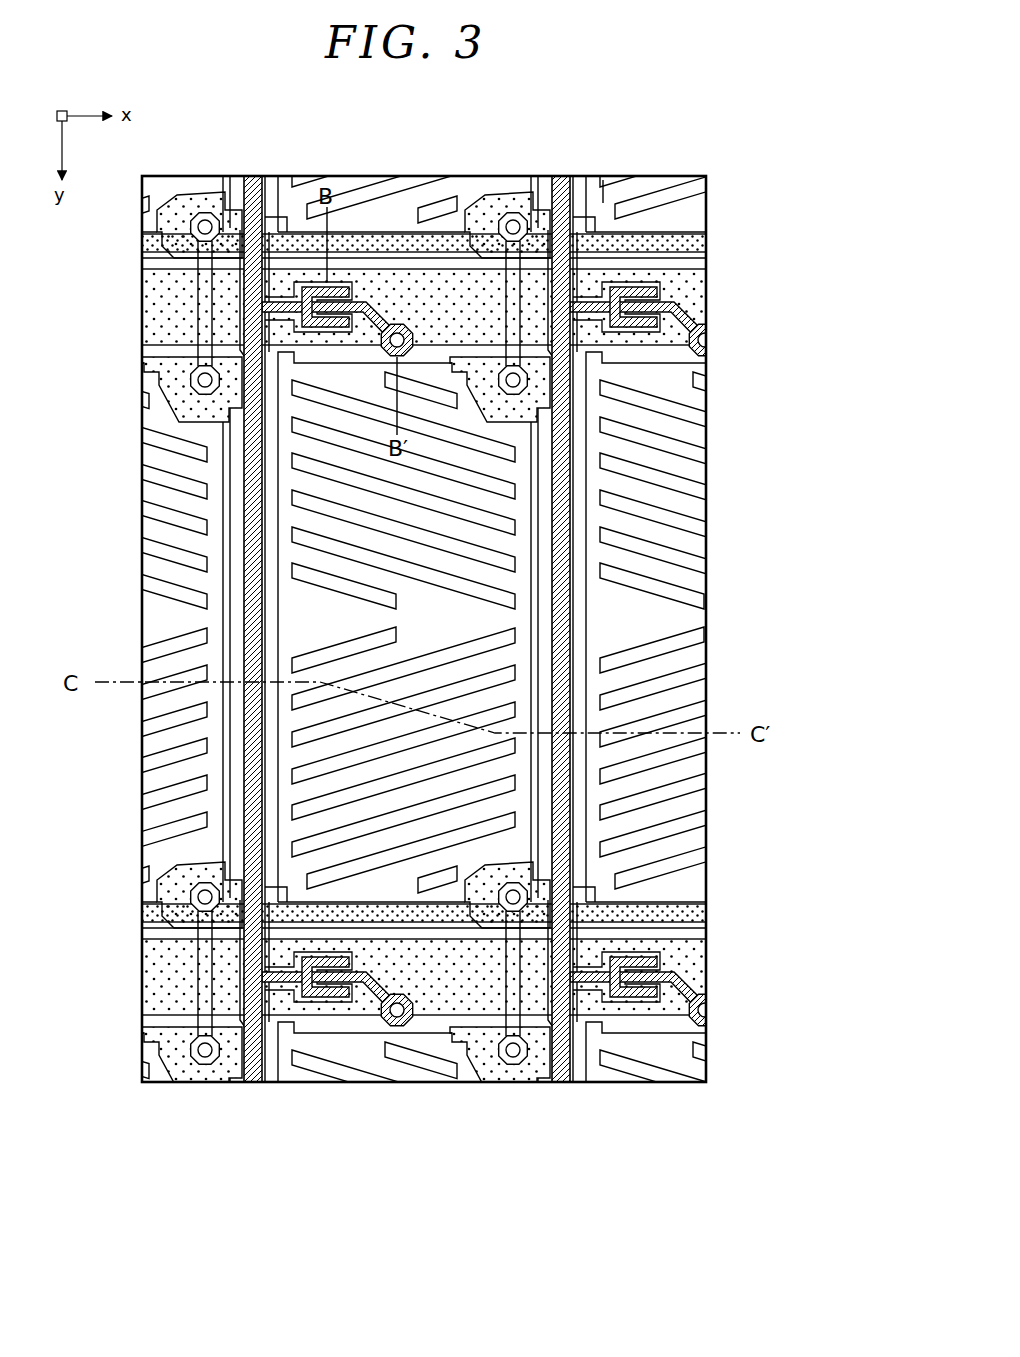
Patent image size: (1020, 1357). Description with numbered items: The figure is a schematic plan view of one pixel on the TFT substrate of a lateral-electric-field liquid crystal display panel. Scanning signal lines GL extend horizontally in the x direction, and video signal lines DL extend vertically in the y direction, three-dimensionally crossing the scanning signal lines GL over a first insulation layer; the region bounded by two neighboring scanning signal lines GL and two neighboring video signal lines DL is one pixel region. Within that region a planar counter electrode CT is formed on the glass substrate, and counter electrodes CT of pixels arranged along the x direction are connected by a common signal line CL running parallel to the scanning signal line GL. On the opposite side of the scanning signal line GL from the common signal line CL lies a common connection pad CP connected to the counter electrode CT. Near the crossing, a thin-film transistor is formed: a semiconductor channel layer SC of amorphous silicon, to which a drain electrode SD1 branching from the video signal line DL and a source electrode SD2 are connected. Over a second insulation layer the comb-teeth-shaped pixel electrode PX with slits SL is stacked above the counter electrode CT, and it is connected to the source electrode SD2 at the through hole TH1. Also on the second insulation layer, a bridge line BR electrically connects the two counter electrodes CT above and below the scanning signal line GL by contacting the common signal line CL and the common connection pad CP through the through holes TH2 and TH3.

The drain electrode SD1 is at (316, 286).
The through hole TH2 is at (513, 220).
The bridge line BR is at (604, 190).
The common signal line CL is at (706, 243).
The scanning signal line GL is at (690, 292).
The through hole TH3 is at (526, 381).
The common connection pad CP is at (535, 400).
The slit SL is at (330, 478).
The pixel electrode PX is at (534, 556).
The counter electrode CT is at (540, 627).
The video signal line DL is at (250, 762).
The channel layer SC is at (323, 1000).
The source electrode SD2 is at (334, 985).
The through hole TH1 is at (395, 1025).